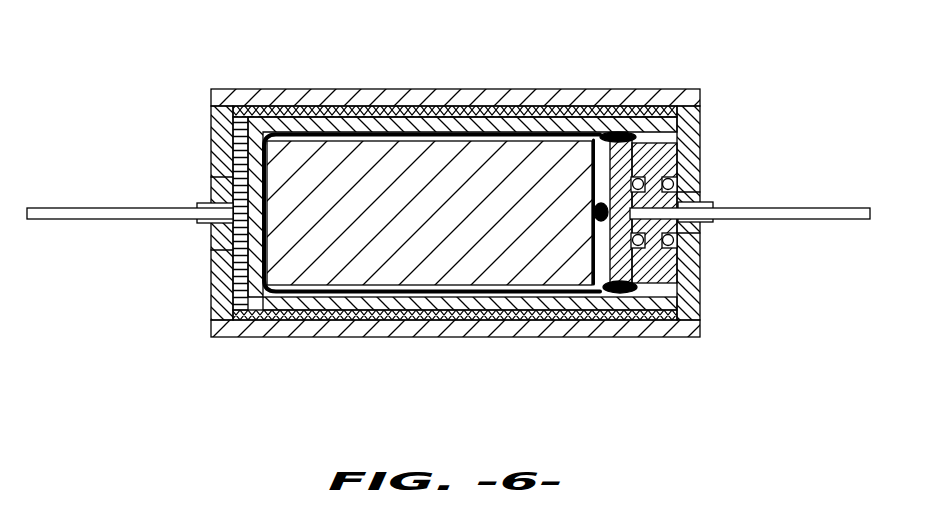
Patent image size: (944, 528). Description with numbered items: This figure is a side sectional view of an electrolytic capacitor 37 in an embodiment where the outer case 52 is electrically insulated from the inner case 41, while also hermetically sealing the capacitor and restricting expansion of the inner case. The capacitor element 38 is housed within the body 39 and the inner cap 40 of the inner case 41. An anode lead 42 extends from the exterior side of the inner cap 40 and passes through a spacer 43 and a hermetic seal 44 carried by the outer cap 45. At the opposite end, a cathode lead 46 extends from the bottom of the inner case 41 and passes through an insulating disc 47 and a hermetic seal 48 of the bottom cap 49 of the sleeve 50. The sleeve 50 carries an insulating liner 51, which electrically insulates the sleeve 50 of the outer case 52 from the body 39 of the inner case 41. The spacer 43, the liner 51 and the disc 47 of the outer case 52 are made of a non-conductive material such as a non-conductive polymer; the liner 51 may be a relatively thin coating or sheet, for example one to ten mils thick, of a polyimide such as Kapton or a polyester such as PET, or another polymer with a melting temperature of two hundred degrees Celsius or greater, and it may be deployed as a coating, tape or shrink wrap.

The capacitor 37 is at (437, 95).
The element 38 is at (515, 172).
The body 39 is at (565, 128).
The inner cap 40 is at (610, 272).
The inner case 41 is at (387, 318).
The anode lead 42 is at (770, 207).
The spacer 43 is at (663, 268).
The hermetic seal 44 is at (705, 188).
The outer cap 45 is at (700, 133).
The cathode lead 46 is at (128, 207).
The insulating disc 47 is at (240, 283).
The hermetic seal 48 is at (208, 238).
The bottom cap 49 is at (223, 127).
The sleeve 50 is at (297, 88).
The insulating liner 51 is at (364, 110).
The outer case 52 is at (317, 340).